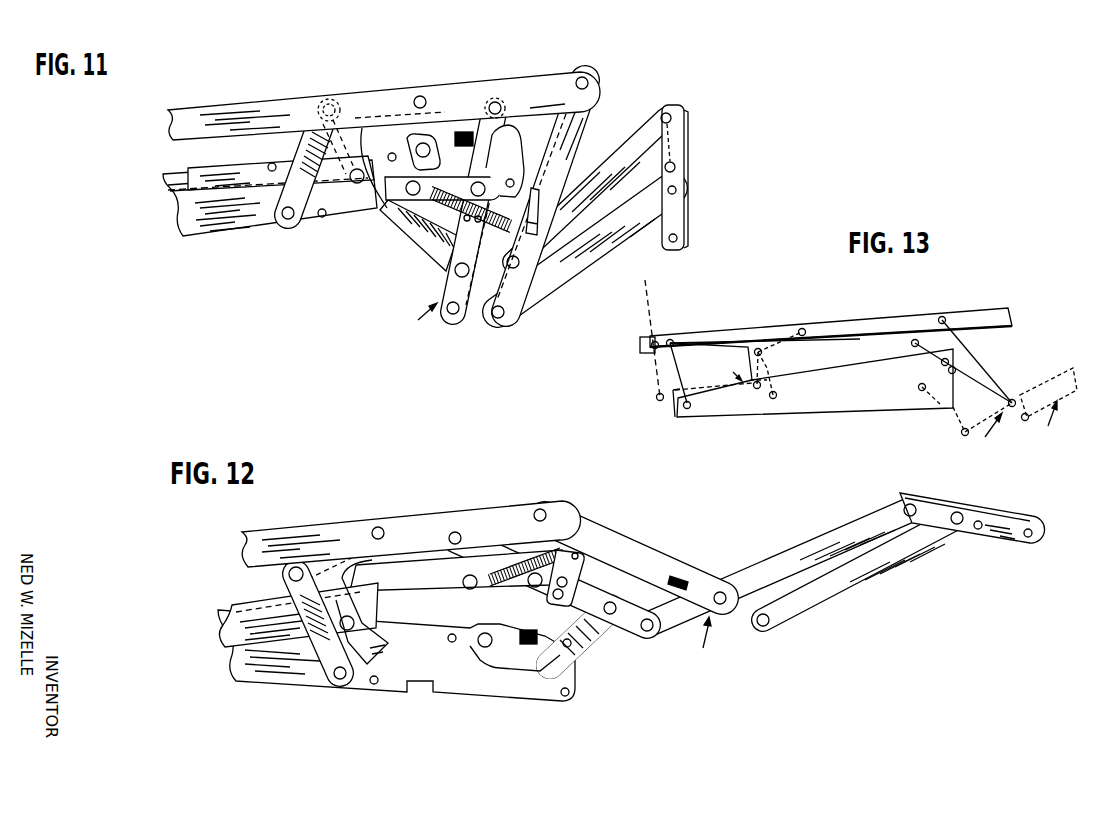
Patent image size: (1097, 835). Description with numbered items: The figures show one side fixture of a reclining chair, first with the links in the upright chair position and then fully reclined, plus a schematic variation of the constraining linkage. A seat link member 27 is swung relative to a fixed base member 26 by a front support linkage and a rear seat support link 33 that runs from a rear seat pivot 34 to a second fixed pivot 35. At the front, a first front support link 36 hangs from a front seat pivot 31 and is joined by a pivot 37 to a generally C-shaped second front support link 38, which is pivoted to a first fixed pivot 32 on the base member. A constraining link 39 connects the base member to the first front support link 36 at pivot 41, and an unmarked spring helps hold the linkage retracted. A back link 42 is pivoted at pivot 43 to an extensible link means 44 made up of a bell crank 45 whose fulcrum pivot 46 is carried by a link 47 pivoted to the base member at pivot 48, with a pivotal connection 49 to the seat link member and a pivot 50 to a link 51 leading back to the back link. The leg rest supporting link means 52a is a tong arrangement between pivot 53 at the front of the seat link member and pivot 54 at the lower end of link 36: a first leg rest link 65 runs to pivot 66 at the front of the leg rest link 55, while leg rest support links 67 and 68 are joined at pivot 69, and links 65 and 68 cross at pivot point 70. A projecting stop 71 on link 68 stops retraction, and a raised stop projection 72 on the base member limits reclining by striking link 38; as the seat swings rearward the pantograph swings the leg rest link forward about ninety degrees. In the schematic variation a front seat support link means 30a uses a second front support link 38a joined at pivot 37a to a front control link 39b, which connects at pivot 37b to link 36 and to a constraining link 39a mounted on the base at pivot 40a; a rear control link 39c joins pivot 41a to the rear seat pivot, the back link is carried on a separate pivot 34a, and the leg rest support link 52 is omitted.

In FIG. 11, the base member 26 is at (262, 223).
In FIG. 13, the base member 26 is at (824, 405).
In FIG. 12, the base member 26 is at (462, 686).
In FIG. 11, the seat link member 27 is at (284, 103).
In FIG. 13, the seat link member 27 is at (868, 327).
In FIG. 12, the seat link member 27 is at (498, 512).
In FIG. 13, the front seat support link means 30a is at (981, 438).
In FIG. 11, the front seat pivot 31 is at (497, 97).
In FIG. 13, the front seat pivot 31 is at (941, 315).
In FIG. 12, the front seat pivot 31 is at (456, 530).
In FIG. 11, the first fixed pivot 32 is at (416, 136).
In FIG. 13, the first fixed pivot 32 is at (921, 382).
In FIG. 12, the first fixed pivot 32 is at (490, 634).
In FIG. 13, the rear seat support link 33 is at (700, 378).
In FIG. 13, the rear seat pivot 34 is at (686, 336).
In FIG. 13, the separate pivot 34a is at (640, 348).
In FIG. 13, the second fixed pivot 35 is at (684, 412).
In FIG. 11, the first front support link 36 is at (520, 146).
In FIG. 13, the first front support link 36 is at (980, 352).
In FIG. 12, the first front support link 36 is at (592, 600).
In FIG. 11, the pivot 37 is at (452, 274).
In FIG. 12, the pivot 37 is at (615, 605).
In FIG. 13, the pivot 37a is at (961, 432).
In FIG. 13, the pivot 37b is at (1012, 408).
In FIG. 11, the second front support link 38 is at (414, 231).
In FIG. 12, the second front support link 38 is at (540, 676).
In FIG. 13, the second front support link 38a is at (962, 407).
In FIG. 11, the constraining link 39 is at (448, 185).
In FIG. 12, the constraining link 39 is at (430, 591).
In FIG. 13, the constraining link 39a is at (950, 358).
In FIG. 13, the front control link 39b is at (1030, 390).
In FIG. 13, the rear control link 39c is at (708, 338).
In FIG. 13, the pivot 40a is at (951, 374).
In FIG. 11, the pivot 41 is at (518, 173).
In FIG. 12, the pivot 41 is at (553, 592).
In FIG. 13, the pivot 41a is at (912, 345).
In FIG. 13, the back link 42 is at (647, 331).
In FIG. 13, the pivot 43 is at (656, 399).
In FIG. 13, the extensible link means 44 is at (727, 370).
In FIG. 11, the bell crank 45 is at (346, 132).
In FIG. 13, the bell crank 45 is at (767, 342).
In FIG. 12, the bell crank 45 is at (342, 579).
In FIG. 11, the pivot 46 is at (331, 98).
In FIG. 12, the pivot 46 is at (288, 577).
In FIG. 11, the link 47 is at (300, 158).
In FIG. 13, the link 47 is at (772, 375).
In FIG. 12, the link 47 is at (325, 680).
In FIG. 11, the pivot 48 is at (290, 222).
In FIG. 13, the pivot 48 is at (780, 396).
In FIG. 12, the pivot 48 is at (340, 682).
In FIG. 11, the pivotal connection 49 is at (422, 95).
In FIG. 13, the pivotal connection 49 is at (801, 328).
In FIG. 12, the pivotal connection 49 is at (380, 526).
In FIG. 11, the pivot 50 is at (356, 187).
In FIG. 13, the pivot 50 is at (757, 392).
In FIG. 12, the pivot 50 is at (395, 614).
In FIG. 11, the link 51 is at (176, 222).
In FIG. 13, the link 51 is at (712, 398).
In FIG. 12, the link 51 is at (226, 646).
In FIG. 13, the leg rest support link 52 is at (1046, 424).
In FIG. 11, the leg rest supporting link means 52a is at (412, 315).
In FIG. 12, the leg rest supporting link means 52a is at (697, 641).
In FIG. 11, the pivot 53 is at (588, 76).
In FIG. 12, the pivot 53 is at (548, 510).
In FIG. 11, the pivot 54 is at (452, 318).
In FIG. 12, the pivot 54 is at (645, 636).
In FIG. 11, the leg rest link 55 is at (662, 229).
In FIG. 12, the leg rest link 55 is at (1000, 520).
In FIG. 11, the first leg rest link 65 is at (630, 146).
In FIG. 12, the first leg rest link 65 is at (768, 566).
In FIG. 11, the pivot 66 is at (678, 115).
In FIG. 12, the pivot 66 is at (910, 503).
In FIG. 11, the leg rest support link 67 is at (572, 254).
In FIG. 12, the leg rest support link 67 is at (866, 577).
In FIG. 11, the leg rest support link 68 is at (556, 176).
In FIG. 12, the leg rest support link 68 is at (668, 569).
In FIG. 11, the pivot 69 is at (680, 165).
In FIG. 12, the pivot 69 is at (958, 526).
In FIG. 11, the pivot point 70 is at (522, 270).
In FIG. 12, the pivot point 70 is at (720, 590).
In FIG. 11, the projecting stop 71 is at (538, 210).
In FIG. 12, the projecting stop 71 is at (682, 577).
In FIG. 11, the raised stop projection 72 is at (465, 130).
In FIG. 12, the raised stop projection 72 is at (526, 629).